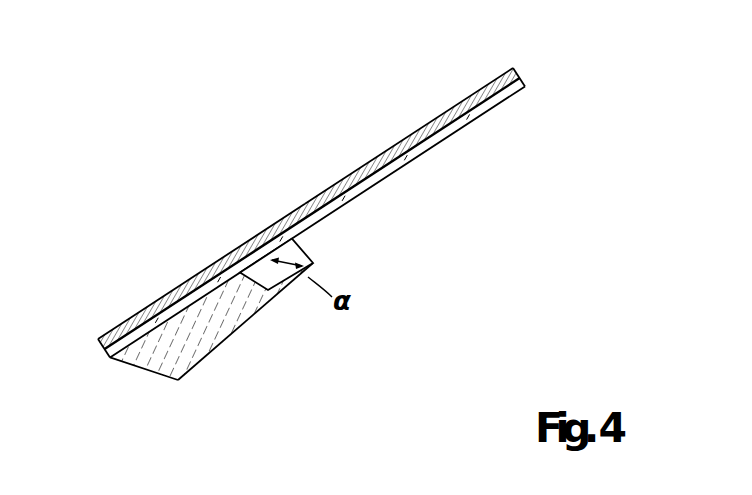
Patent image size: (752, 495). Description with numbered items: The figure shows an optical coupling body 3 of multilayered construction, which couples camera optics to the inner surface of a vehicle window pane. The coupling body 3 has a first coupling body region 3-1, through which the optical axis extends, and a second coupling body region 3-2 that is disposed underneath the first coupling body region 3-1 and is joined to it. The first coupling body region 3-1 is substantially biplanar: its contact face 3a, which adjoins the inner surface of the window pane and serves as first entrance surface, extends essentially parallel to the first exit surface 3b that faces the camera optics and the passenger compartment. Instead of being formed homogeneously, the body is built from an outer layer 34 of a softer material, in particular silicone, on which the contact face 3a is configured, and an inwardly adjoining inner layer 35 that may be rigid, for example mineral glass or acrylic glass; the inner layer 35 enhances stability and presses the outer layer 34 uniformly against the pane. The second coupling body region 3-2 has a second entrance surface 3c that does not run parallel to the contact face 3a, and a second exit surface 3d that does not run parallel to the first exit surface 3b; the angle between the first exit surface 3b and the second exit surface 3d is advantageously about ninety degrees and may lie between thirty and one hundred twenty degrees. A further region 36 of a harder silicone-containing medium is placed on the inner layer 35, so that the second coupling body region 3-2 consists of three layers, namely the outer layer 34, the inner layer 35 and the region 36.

The optical coupling body 3 is at (140, 283).
The first coupling body region 3-1 is at (480, 93).
The contact face 3a is at (397, 141).
The first exit surface 3b is at (497, 108).
The second entrance surface 3c is at (153, 370).
The second exit surface 3d is at (313, 262).
The second coupling body region 3-2 is at (250, 310).
The outer layer 34 is at (316, 198).
The inner layer 35 is at (460, 123).
The region 36 is at (210, 333).